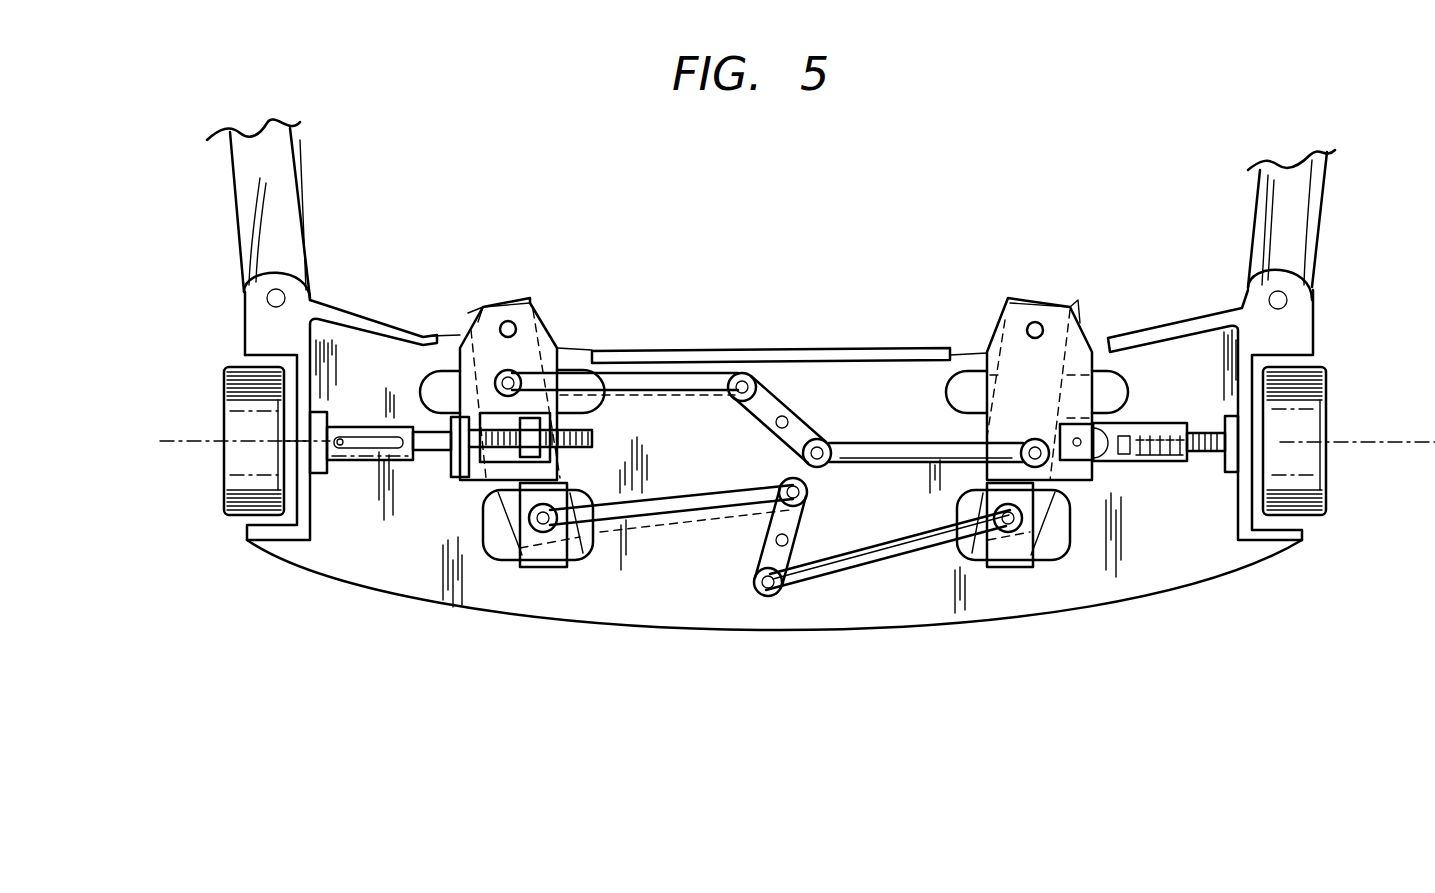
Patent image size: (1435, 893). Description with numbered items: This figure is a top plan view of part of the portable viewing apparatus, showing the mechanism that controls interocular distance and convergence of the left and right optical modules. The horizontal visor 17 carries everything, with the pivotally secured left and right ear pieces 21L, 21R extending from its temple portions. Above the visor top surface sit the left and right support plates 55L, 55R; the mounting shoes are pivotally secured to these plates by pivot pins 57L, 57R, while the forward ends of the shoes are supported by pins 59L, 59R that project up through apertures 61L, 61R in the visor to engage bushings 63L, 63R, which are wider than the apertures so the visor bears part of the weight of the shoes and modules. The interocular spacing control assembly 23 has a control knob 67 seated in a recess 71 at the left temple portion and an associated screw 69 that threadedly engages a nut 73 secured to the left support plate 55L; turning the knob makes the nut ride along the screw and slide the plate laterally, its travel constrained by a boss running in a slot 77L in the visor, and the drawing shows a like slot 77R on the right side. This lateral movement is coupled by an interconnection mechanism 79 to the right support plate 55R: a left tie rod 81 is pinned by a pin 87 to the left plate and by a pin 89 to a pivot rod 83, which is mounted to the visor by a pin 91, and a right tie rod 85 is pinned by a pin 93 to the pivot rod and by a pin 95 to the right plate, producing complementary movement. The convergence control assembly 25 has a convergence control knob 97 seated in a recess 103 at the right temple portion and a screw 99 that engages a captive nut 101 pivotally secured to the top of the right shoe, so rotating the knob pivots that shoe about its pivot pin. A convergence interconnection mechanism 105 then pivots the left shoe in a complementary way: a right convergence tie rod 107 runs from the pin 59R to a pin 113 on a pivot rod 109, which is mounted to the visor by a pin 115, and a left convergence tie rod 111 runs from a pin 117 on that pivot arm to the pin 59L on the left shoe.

The visor 17 is at (625, 610).
The right ear piece 21R is at (300, 168).
The left ear piece 21L is at (1313, 213).
The interocular spacing control assembly 23 is at (1153, 470).
The convergence control assembly 25 is at (357, 472).
The right support plate 55R is at (550, 340).
The left support plate 55L is at (990, 340).
The pivot pin 57R is at (508, 321).
The pivot pin 57L is at (1037, 322).
The pin 59R is at (520, 530).
The pin 59L is at (1017, 525).
The aperture 61R is at (588, 562).
The aperture 61L is at (1053, 556).
The bushing 63R is at (537, 557).
The bushing 63L is at (998, 557).
The control knob 67 is at (1327, 493).
The screw 69 is at (1205, 455).
The recess 71 is at (1307, 360).
The nut 73 is at (1155, 423).
The right stop 77R is at (443, 370).
The slot 77L is at (1125, 345).
The interconnection mechanism 79 is at (772, 377).
The left tie rod 81 is at (897, 443).
The pivot rod 83 is at (810, 438).
The right tie rod 85 is at (672, 371).
The pin 87 is at (1037, 452).
The pin 89 is at (832, 445).
The pin 91 is at (774, 424).
The pin 93 is at (735, 372).
The pin 95 is at (518, 371).
The convergence control knob 97 is at (222, 478).
The screw 99 is at (475, 480).
The captive nut 101 is at (560, 418).
The recess 103 is at (244, 353).
The convergence interconnection mechanism 105 is at (760, 550).
The right convergence tie rod 107 is at (670, 517).
The pivot rod 109 is at (797, 517).
The left convergence tie rod 111 is at (917, 553).
The pin 113 is at (793, 481).
The pin 115 is at (789, 541).
The pin 117 is at (769, 592).